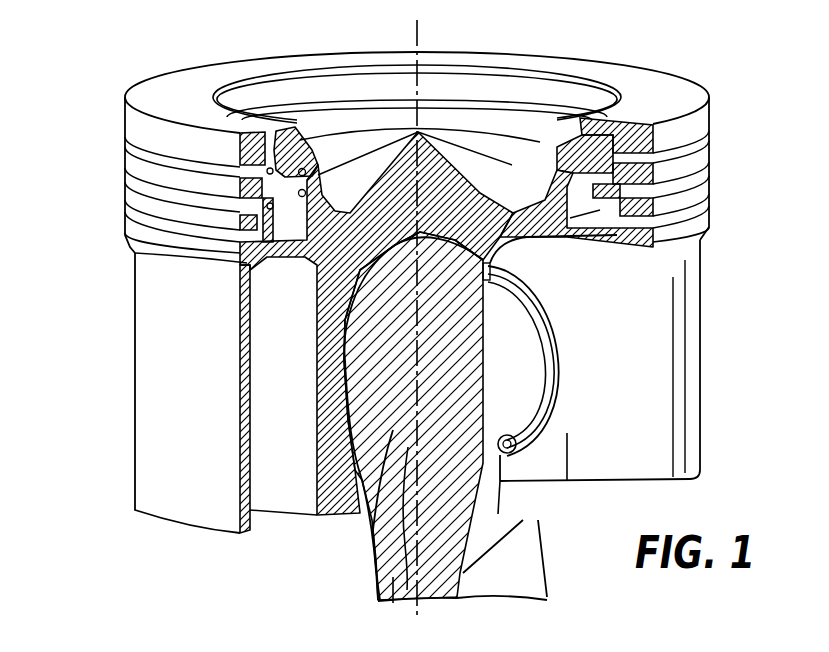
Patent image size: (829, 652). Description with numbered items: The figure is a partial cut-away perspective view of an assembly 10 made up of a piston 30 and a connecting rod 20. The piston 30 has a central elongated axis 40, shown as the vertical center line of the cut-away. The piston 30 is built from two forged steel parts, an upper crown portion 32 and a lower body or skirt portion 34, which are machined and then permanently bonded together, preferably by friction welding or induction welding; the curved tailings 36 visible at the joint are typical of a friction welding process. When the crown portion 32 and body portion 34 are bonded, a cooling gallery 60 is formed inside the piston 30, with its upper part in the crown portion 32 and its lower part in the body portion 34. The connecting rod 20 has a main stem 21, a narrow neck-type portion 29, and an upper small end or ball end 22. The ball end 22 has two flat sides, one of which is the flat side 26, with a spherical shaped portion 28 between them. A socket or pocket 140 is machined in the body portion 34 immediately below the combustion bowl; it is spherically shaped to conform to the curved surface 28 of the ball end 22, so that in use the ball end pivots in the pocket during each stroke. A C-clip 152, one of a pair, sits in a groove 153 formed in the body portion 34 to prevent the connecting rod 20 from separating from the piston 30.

The assembly 10 is at (180, 546).
The connecting rod 20 is at (532, 565).
The main stem 21 is at (540, 592).
The small end 22 is at (387, 432).
The flat side 26 is at (522, 365).
The spherical shaped portion 28 is at (400, 237).
The neck-type portion 29 is at (498, 514).
The piston 30 is at (698, 412).
The crown portion 32 is at (125, 122).
The body portion 34 is at (143, 400).
The curved tailings 36 is at (302, 172).
The central elongated axis 40 is at (418, 44).
The cooling gallery 60 is at (583, 215).
The socket 140 is at (448, 250).
The C-clip 152 is at (540, 413).
The groove 153 is at (547, 300).